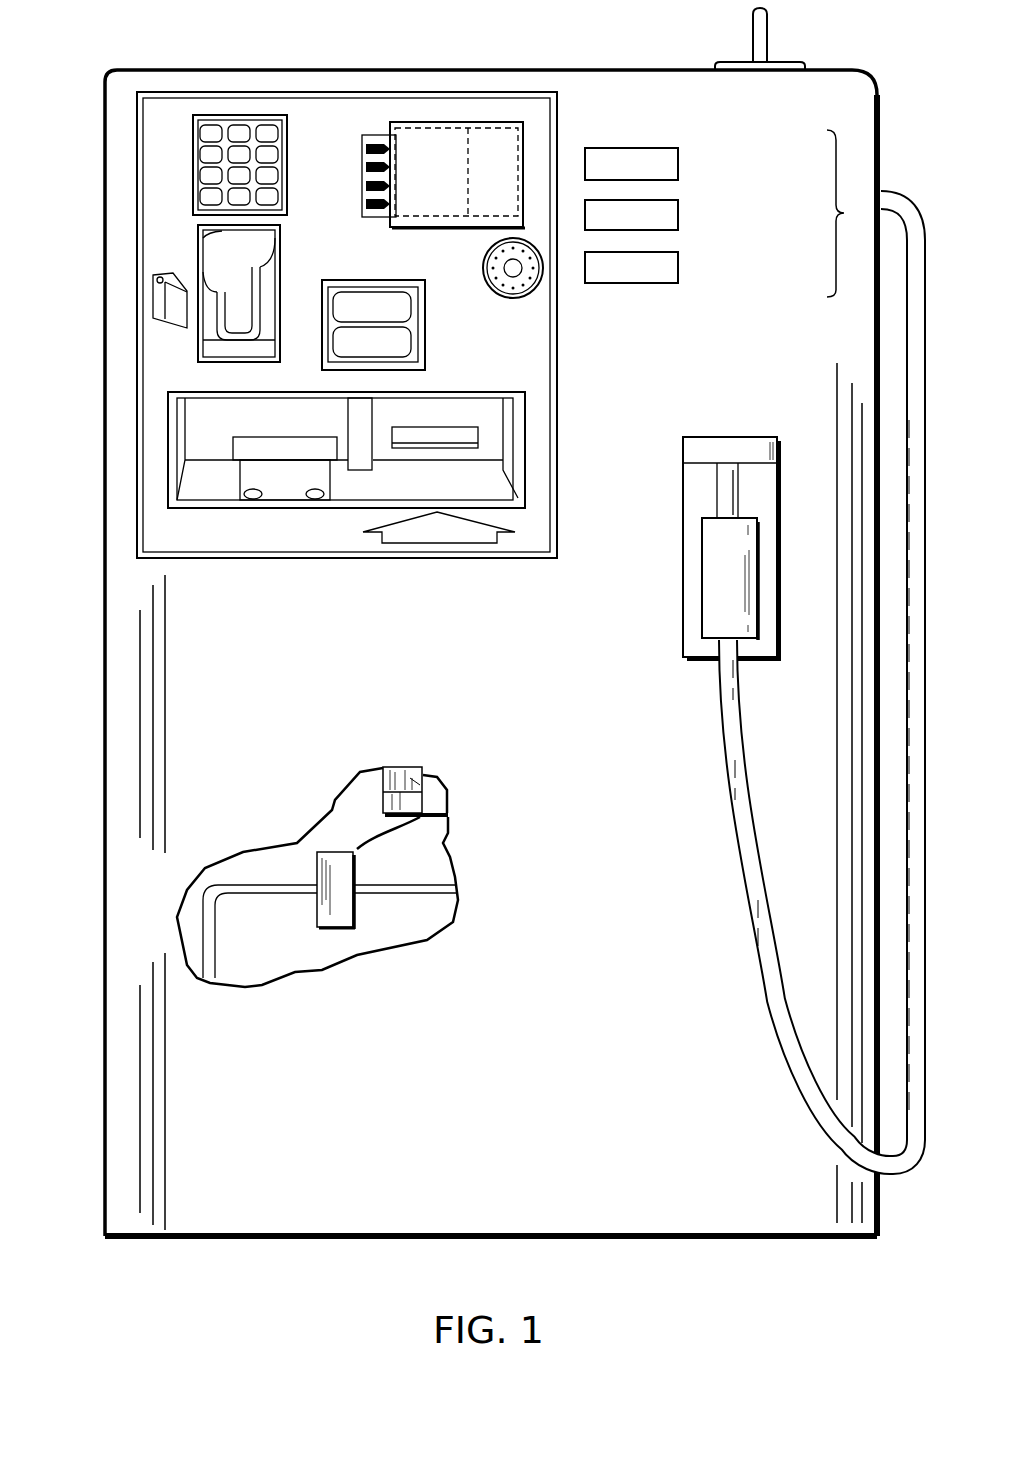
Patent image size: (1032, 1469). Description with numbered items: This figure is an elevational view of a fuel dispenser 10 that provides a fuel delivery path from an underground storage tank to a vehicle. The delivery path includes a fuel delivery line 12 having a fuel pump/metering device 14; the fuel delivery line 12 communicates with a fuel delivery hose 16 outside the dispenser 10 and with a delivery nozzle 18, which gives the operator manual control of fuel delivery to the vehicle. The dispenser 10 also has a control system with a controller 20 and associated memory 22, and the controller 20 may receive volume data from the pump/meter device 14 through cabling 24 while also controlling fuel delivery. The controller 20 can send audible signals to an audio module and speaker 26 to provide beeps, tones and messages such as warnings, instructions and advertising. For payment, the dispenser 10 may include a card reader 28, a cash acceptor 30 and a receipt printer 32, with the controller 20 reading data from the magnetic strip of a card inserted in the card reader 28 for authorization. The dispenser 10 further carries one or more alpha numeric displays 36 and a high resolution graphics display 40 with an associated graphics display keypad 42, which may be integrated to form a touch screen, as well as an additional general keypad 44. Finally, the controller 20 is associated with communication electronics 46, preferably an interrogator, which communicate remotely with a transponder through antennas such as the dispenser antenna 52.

The fuel dispenser 10 is at (569, 55).
The fuel delivery line 12 is at (208, 900).
The fuel pump/metering device 14 is at (317, 852).
The fuel delivery hose 16 is at (893, 1166).
The delivery nozzle 18 is at (737, 605).
The controller 20 is at (383, 800).
The memory 22 is at (388, 767).
The cabling 24 is at (353, 850).
The audio module and speaker 26 is at (520, 250).
The card reader 28 is at (220, 252).
The cash acceptor 30 is at (247, 450).
The receipt printer 32 is at (402, 440).
The alpha numeric displays 36 is at (844, 213).
The high resolution graphics display 40 is at (498, 123).
The graphics display keypad 42 is at (380, 136).
The general keypad 44 is at (215, 128).
The communication electronics 46 is at (412, 780).
The dispenser antenna 52 is at (768, 40).